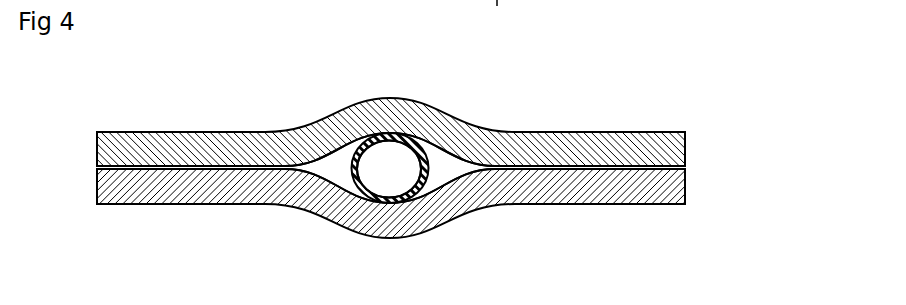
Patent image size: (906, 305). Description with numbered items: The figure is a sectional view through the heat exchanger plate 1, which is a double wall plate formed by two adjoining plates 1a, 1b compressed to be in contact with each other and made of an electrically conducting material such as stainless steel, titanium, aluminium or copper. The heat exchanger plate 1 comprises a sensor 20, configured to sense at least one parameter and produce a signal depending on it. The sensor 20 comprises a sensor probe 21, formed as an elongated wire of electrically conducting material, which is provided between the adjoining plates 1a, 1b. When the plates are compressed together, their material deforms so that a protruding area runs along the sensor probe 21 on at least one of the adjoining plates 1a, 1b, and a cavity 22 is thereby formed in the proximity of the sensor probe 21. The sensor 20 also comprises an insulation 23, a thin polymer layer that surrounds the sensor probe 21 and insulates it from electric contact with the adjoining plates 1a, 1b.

The heat exchanger plate 1 is at (401, 166).
The adjoining plate 1a is at (658, 143).
The adjoining plate 1b is at (658, 185).
The sensor 20 is at (373, 168).
The sensor probe 21 is at (397, 173).
The cavity 22 is at (335, 166).
The insulation 23 is at (372, 137).